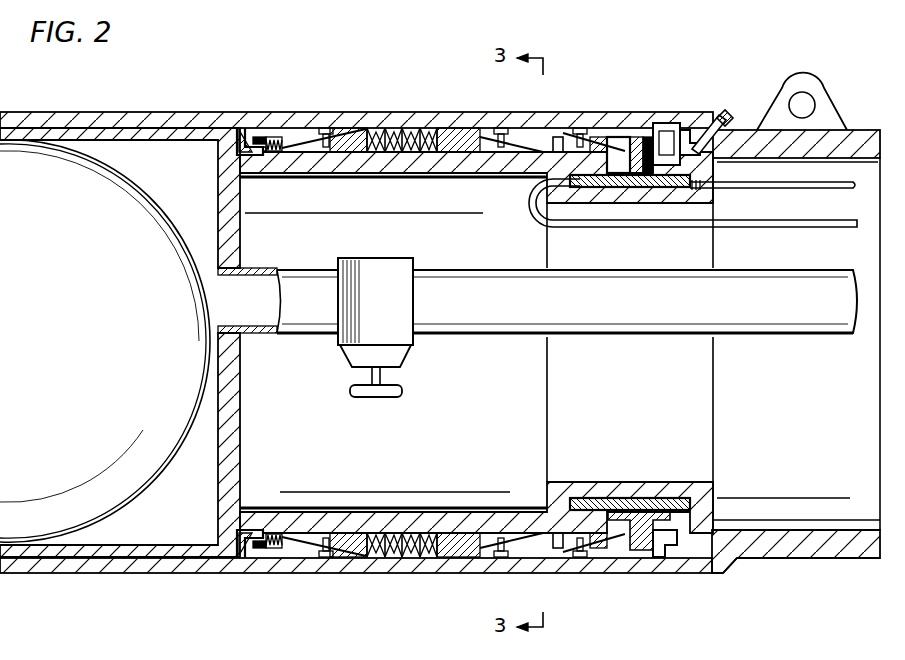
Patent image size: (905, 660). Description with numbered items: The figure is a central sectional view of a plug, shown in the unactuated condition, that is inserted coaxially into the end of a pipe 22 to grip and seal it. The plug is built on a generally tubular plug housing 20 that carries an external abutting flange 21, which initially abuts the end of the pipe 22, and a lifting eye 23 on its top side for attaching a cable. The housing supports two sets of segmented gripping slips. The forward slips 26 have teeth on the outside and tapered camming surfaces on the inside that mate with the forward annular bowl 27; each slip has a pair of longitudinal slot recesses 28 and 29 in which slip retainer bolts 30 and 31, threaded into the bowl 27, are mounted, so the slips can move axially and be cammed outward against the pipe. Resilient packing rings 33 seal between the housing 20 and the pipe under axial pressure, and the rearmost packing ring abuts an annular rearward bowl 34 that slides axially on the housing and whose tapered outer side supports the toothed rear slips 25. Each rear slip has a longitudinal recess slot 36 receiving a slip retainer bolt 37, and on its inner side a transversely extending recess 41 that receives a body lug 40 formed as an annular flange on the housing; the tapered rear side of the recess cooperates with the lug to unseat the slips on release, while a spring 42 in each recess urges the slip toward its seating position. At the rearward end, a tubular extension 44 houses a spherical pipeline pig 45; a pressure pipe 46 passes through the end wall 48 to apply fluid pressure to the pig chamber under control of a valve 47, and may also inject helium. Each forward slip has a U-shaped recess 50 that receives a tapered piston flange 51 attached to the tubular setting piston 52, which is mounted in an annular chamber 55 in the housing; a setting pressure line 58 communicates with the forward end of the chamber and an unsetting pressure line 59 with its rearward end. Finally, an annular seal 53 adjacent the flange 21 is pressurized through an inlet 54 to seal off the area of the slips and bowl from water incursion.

The plug housing 20 is at (810, 552).
The external abutting flange 21 is at (718, 563).
The pipe 22 is at (212, 570).
The lifting eye 23 is at (823, 86).
The rearward slips 25 is at (239, 128).
The forward slips 26 is at (635, 135).
The forward annular bowl 27 is at (458, 137).
The slot recess 28 is at (536, 132).
The slot recess 29 is at (621, 136).
The slip retainer bolt 30 is at (503, 124).
The slip retainer bolt 31 is at (581, 131).
The packing rings 33 is at (404, 132).
The rearward bowl 34 is at (359, 133).
The longitudinal recess slot 36 is at (289, 136).
The slip retainer bolt 37 is at (326, 130).
The body lug 40 is at (259, 137).
The transversely extending recess 41 is at (278, 151).
The spring 42 is at (272, 153).
The tubular extension 44 is at (54, 134).
The spherical pipeline pig 45 is at (110, 378).
The pressure pipe 46 is at (793, 330).
The valve 47 is at (402, 355).
The end wall 48 is at (240, 428).
The U-shaped recess 50 is at (668, 131).
The piston flange 51 is at (694, 120).
The setting piston 52 is at (648, 190).
The annular seal 53 is at (716, 121).
The inlet 54 is at (729, 120).
The annular chamber 55 is at (583, 187).
The setting pressure line 58 is at (788, 188).
The unsetting pressure line 59 is at (788, 228).